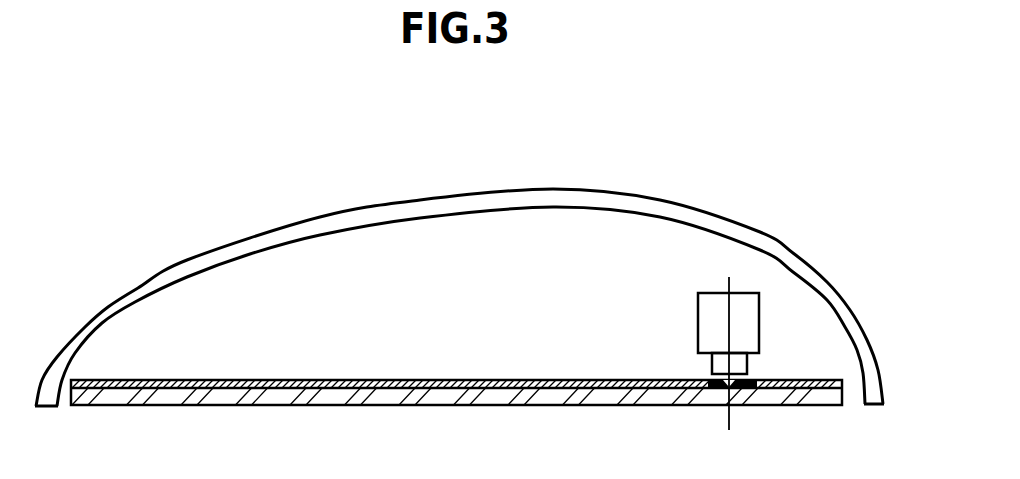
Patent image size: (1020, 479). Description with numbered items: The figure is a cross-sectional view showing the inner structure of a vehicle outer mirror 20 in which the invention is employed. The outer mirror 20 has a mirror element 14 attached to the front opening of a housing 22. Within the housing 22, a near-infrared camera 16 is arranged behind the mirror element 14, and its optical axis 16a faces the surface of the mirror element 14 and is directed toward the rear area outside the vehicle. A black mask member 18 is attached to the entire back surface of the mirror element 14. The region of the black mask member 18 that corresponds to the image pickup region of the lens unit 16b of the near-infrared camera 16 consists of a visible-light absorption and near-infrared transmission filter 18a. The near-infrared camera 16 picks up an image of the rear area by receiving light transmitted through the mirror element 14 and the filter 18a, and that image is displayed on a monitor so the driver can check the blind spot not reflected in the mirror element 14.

The mirror element 14 is at (420, 408).
The near-infrared camera 16 is at (759, 315).
The optical axis 16a is at (729, 278).
The lens unit 16b is at (711, 363).
The black mask member 18 is at (528, 389).
The visible-light absorption and near-infrared transmission filter 18a is at (713, 390).
The outer mirror 20 is at (697, 179).
The housing 22 is at (553, 187).